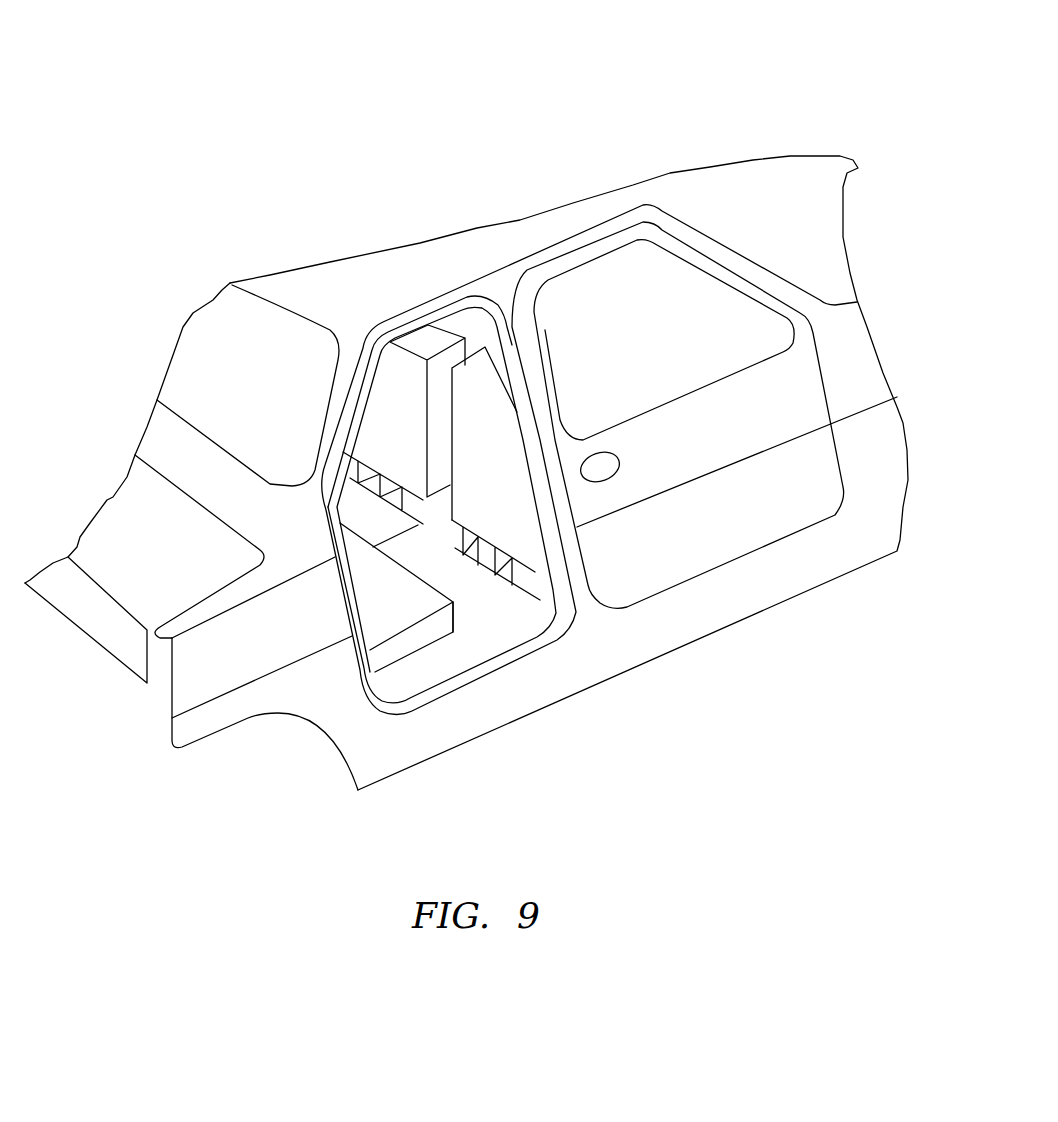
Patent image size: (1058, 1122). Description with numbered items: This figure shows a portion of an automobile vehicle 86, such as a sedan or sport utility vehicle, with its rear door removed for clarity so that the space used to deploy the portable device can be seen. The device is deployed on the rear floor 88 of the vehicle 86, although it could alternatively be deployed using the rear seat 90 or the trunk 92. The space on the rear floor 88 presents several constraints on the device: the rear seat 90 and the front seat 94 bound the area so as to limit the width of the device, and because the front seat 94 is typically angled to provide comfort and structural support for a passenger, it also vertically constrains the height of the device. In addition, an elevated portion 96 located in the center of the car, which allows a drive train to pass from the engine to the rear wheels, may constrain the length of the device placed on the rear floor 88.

The automobile vehicle 86 is at (702, 125).
The rear floor 88 is at (507, 637).
The rear seat 90 is at (408, 647).
The trunk 92 is at (100, 635).
The front seat 94 is at (533, 547).
The elevated portion 96 is at (458, 637).